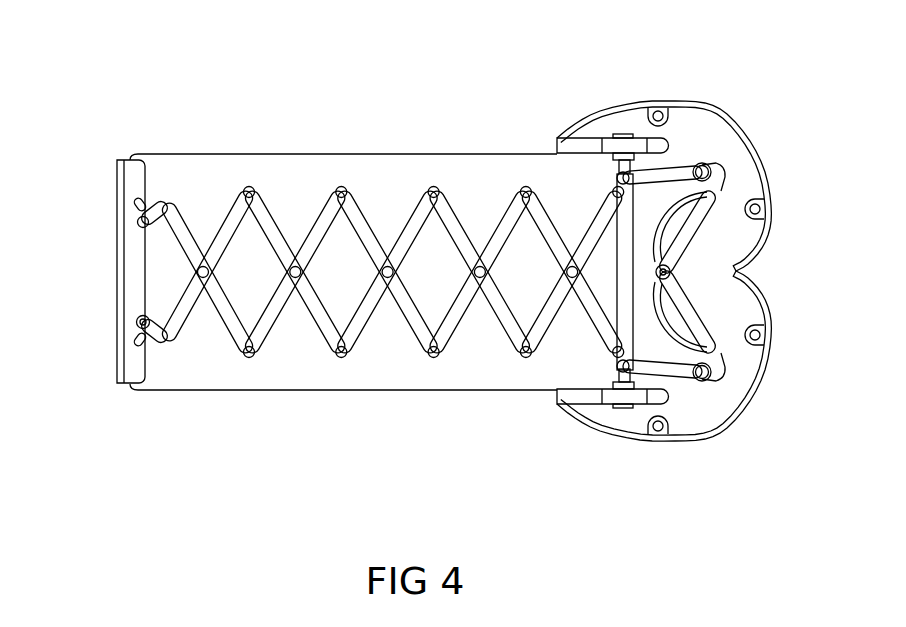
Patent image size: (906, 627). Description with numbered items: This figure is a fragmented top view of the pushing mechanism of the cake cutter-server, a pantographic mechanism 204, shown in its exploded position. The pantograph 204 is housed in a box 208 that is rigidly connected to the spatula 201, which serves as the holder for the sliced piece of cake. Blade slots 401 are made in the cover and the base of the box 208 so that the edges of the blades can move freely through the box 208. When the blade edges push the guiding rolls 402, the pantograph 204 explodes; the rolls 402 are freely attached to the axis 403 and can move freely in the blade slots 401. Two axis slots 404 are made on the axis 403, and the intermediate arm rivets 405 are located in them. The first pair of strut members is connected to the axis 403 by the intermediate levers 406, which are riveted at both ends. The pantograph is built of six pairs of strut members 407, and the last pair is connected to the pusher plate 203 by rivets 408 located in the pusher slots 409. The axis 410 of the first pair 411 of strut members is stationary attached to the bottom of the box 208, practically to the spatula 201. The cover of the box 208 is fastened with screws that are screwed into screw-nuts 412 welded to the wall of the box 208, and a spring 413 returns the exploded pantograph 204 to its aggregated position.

The spatula 201 is at (277, 373).
The pusher plate 203 is at (140, 253).
The pantographic mechanism 204 is at (394, 347).
The box 208 is at (614, 124).
The blade slots 401 is at (588, 148).
The guiding rolls 402 is at (629, 147).
The axis 403 is at (622, 273).
The axis slots 404 is at (705, 380).
The intermediate arm rivets 405 is at (628, 175).
The intermediate levers 406 is at (670, 174).
The strut members 407 is at (367, 230).
The rivets 408 is at (143, 320).
The pusher slots 409 is at (141, 197).
The axis 410 is at (668, 272).
The first pair 411 is at (677, 250).
The screw-nuts 412 is at (760, 208).
The spring 413 is at (760, 335).